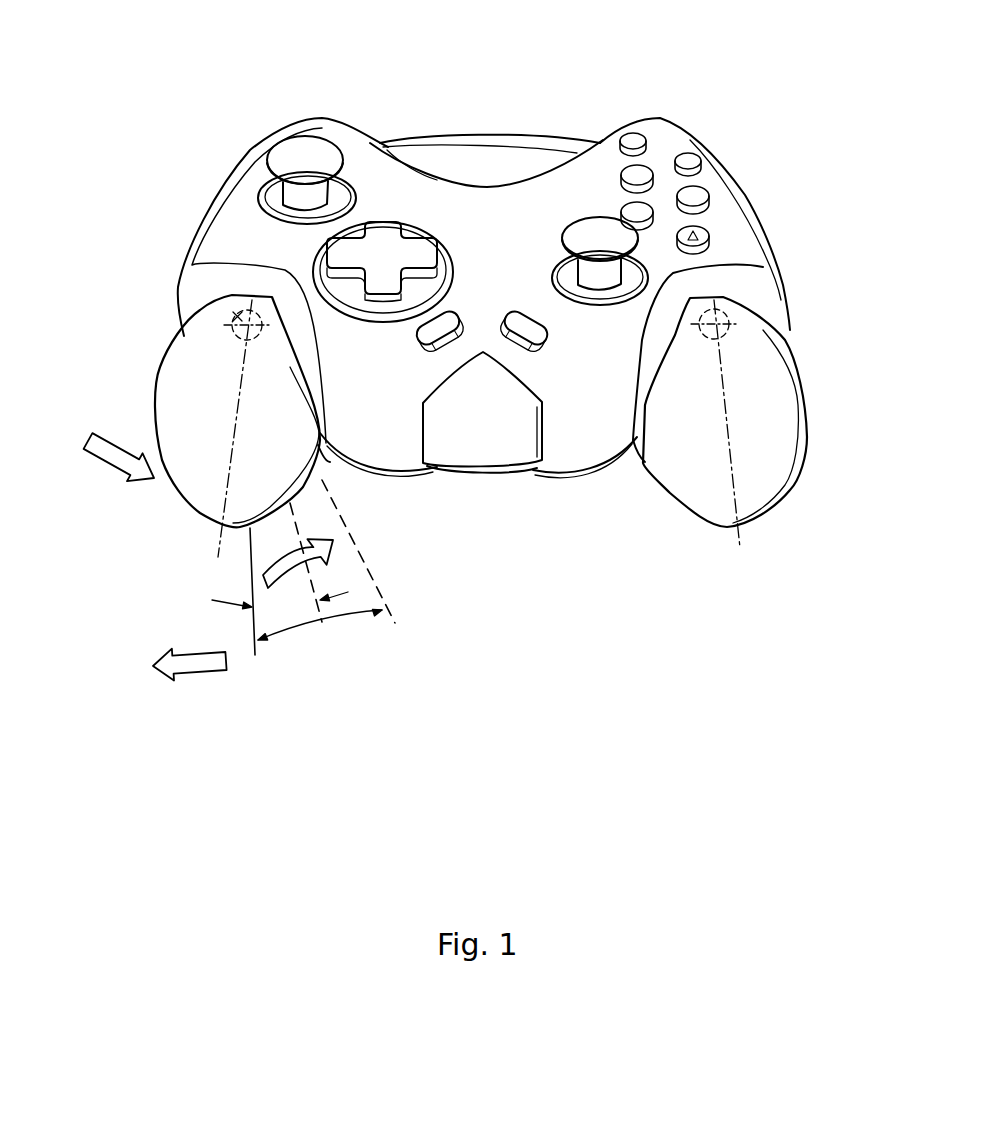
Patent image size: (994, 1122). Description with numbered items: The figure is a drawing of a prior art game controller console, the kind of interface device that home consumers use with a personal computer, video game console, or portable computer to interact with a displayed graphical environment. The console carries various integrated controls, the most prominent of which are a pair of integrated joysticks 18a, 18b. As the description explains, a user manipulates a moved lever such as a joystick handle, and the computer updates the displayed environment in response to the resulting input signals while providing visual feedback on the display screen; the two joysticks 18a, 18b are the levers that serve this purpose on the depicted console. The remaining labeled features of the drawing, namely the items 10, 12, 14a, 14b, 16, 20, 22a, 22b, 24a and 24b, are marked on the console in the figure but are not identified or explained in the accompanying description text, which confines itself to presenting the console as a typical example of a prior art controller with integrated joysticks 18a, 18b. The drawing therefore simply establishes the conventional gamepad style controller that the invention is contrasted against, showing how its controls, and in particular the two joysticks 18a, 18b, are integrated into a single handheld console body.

The game controller 10 is at (728, 92).
The housing body 12 is at (485, 203).
The left handle grip 14a is at (180, 480).
The right handle grip 14b is at (778, 477).
The directional pad 16 is at (383, 242).
The joystick 18a is at (304, 147).
The joystick 18b is at (590, 227).
The action buttons 20 is at (717, 253).
The left grip joint 22a is at (310, 460).
The right grip joint 22b is at (693, 518).
The left pivot axis 24a is at (236, 293).
The right pivot axis 24b is at (727, 312).